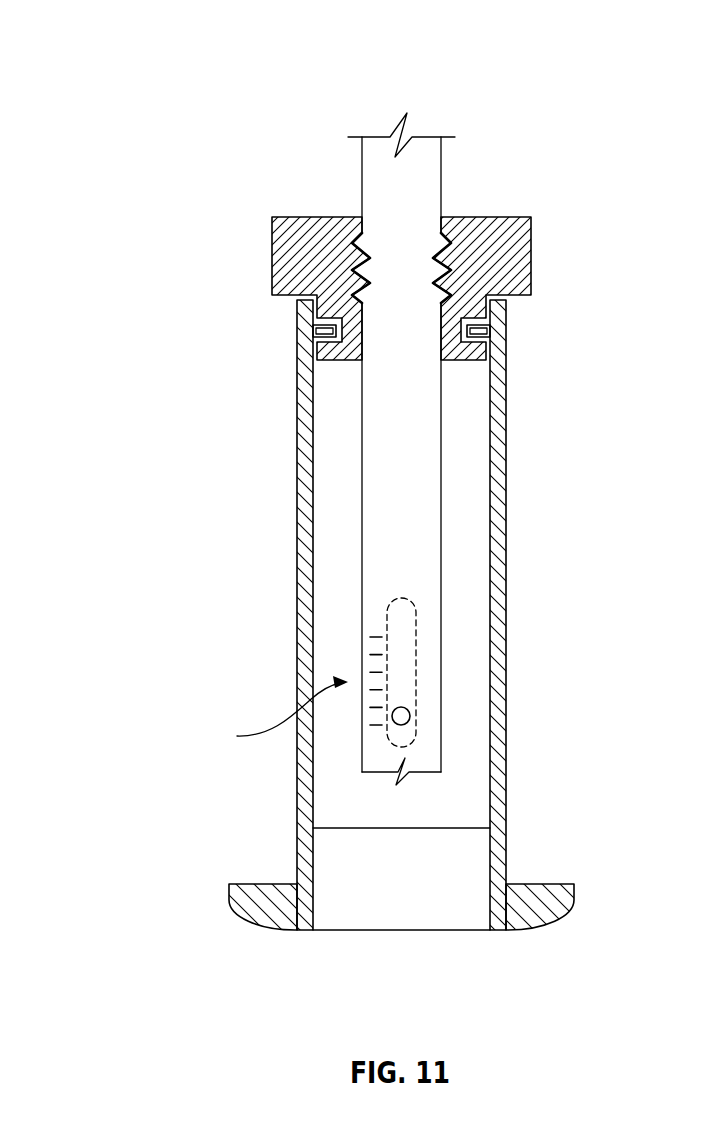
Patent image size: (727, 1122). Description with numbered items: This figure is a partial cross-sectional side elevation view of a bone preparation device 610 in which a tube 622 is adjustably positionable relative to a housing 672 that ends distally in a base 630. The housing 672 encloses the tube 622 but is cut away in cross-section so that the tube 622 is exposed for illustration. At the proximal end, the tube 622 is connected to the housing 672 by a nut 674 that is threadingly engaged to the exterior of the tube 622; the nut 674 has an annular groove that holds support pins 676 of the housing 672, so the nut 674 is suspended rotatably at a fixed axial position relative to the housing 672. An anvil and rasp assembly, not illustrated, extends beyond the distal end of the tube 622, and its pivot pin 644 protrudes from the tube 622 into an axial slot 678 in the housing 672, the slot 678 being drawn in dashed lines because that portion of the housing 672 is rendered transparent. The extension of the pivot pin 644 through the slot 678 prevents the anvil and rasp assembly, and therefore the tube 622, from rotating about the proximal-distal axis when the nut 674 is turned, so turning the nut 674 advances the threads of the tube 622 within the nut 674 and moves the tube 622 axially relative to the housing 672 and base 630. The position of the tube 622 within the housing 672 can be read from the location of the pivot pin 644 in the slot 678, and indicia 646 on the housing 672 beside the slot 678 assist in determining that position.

The bone preparation device 610 is at (136, 56).
The tube 622 is at (443, 455).
The nut 674 is at (523, 243).
The support pins 676 is at (473, 329).
The housing 672 is at (507, 600).
The base 630 is at (229, 889).
The axial slot 678 is at (417, 677).
The pivot pin 644 is at (410, 716).
The indicia 646 is at (265, 713).